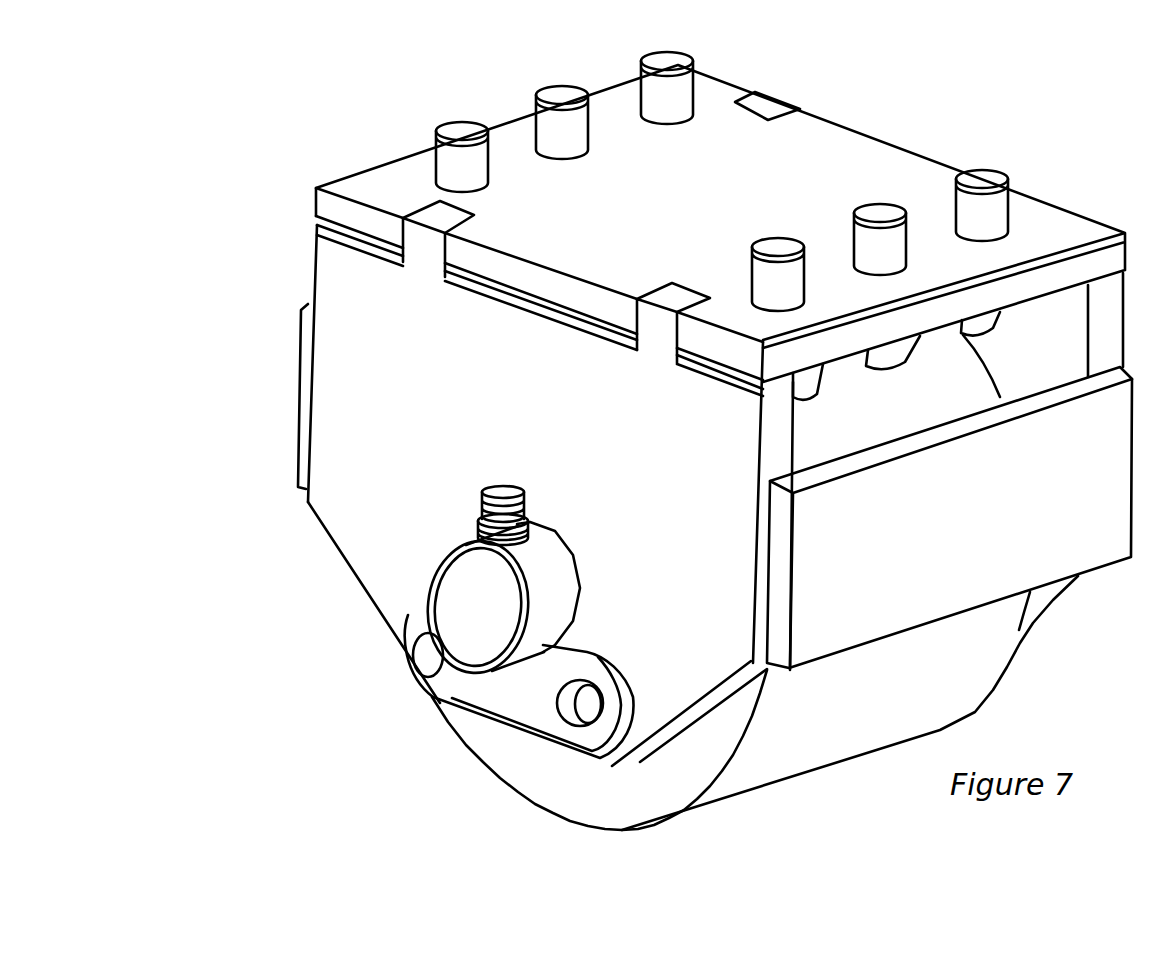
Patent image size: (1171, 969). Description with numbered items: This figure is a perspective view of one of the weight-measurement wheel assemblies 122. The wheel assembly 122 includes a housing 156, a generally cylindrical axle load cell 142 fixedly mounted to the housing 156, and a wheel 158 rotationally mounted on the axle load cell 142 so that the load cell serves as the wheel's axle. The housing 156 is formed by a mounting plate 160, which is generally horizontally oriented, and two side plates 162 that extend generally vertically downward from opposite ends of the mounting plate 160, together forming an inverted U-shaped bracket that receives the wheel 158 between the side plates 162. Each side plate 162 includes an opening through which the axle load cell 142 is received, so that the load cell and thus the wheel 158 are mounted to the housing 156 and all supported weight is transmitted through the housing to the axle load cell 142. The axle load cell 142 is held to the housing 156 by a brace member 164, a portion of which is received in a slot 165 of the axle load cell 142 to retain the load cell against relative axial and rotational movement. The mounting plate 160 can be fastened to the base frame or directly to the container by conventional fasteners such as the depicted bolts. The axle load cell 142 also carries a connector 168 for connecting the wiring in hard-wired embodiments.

The wheel assembly 122 is at (314, 750).
The axle load cell 142 is at (414, 600).
The housing 156 is at (1105, 192).
The wheel 158 is at (1016, 686).
The mounting plate 160 is at (850, 160).
The side plate 162 is at (337, 550).
The brace member 164 is at (438, 716).
The slot 165 is at (580, 627).
The connector 168 is at (463, 519).